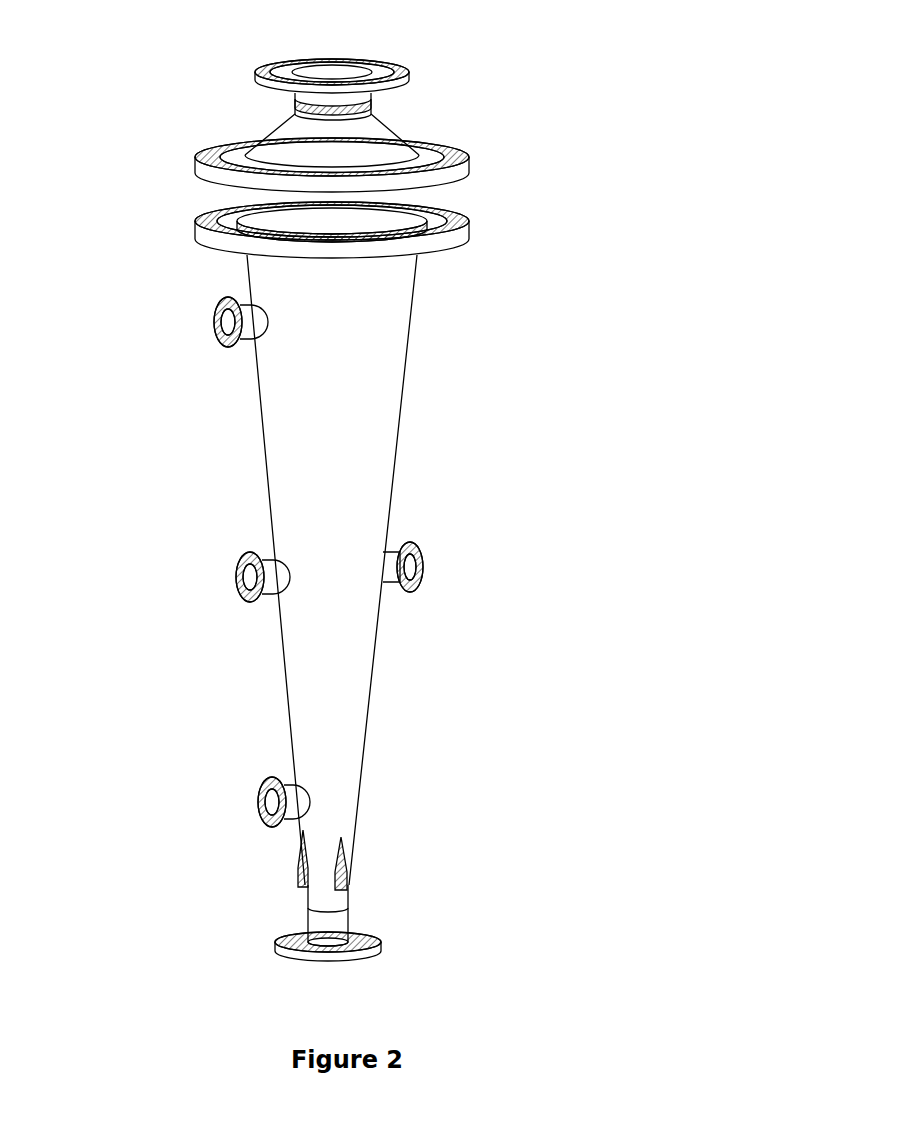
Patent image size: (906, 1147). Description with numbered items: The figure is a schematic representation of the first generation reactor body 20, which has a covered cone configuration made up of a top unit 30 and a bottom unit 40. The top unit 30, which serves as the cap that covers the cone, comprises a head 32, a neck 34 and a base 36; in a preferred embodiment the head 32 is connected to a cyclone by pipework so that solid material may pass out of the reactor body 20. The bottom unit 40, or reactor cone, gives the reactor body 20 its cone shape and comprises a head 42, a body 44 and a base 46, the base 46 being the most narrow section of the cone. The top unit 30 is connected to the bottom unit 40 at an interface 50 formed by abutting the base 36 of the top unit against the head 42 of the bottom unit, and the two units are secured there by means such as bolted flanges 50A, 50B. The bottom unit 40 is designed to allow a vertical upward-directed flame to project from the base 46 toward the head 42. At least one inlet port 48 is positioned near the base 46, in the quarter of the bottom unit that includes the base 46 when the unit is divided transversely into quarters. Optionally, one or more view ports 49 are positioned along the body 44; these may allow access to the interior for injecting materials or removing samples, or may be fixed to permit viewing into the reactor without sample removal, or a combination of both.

The reactor body 20 is at (628, 251).
The top unit 30 is at (465, 91).
The head 32 is at (255, 77).
The neck 34 is at (280, 130).
The base 36 is at (437, 154).
The interface 50 is at (467, 201).
The bolted flange 50A is at (197, 162).
The bolted flange 50B is at (195, 218).
The bottom unit 40 is at (395, 424).
The head 42 is at (283, 293).
The body 44 is at (353, 702).
The view port 49 is at (261, 774).
The inlet port 48 is at (365, 877).
The base 46 is at (298, 933).